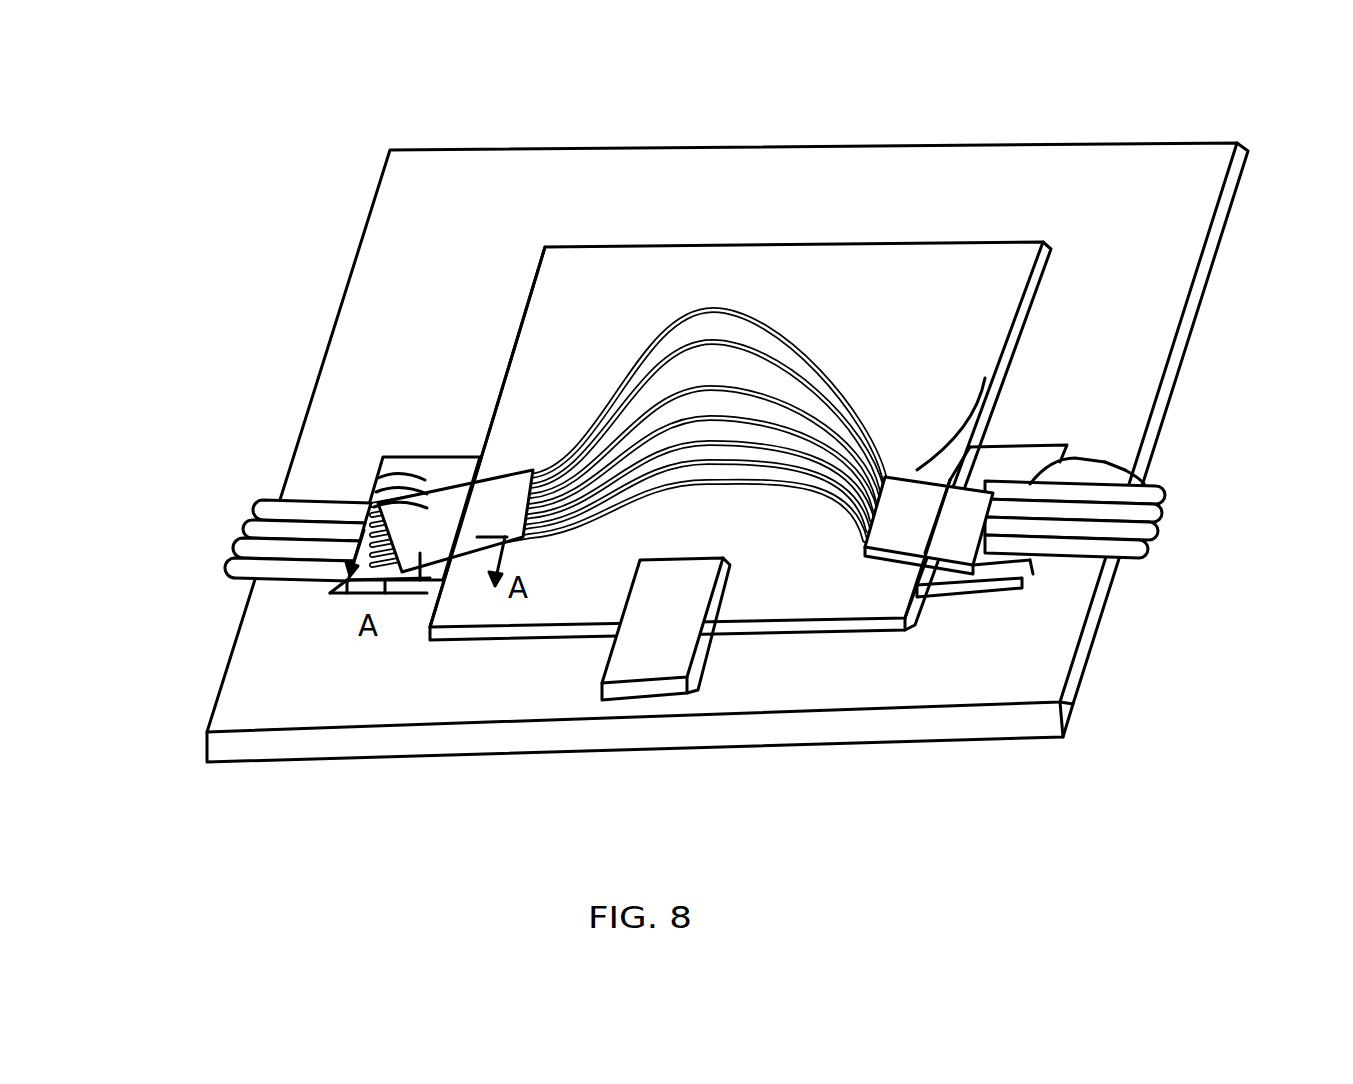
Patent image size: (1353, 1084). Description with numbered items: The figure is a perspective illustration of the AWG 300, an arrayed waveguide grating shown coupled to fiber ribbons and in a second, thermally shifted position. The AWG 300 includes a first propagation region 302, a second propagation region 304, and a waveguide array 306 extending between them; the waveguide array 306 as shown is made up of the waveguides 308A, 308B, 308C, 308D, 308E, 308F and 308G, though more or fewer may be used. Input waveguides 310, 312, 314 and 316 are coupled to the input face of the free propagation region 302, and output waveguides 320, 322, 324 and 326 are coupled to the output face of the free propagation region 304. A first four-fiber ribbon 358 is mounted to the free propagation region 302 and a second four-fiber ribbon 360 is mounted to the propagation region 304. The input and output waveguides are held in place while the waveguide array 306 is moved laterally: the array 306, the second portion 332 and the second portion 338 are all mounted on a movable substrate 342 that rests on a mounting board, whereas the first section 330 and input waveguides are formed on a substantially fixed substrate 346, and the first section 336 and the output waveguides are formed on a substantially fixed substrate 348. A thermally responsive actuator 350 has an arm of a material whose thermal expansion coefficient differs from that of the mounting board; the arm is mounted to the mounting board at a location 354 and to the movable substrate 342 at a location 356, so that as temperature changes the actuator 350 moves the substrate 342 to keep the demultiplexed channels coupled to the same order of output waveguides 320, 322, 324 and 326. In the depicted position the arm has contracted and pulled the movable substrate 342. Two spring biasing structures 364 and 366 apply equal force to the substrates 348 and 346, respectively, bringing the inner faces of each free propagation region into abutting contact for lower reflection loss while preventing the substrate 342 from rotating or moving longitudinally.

The AWG 300 is at (498, 125).
The first propagation region 302 is at (466, 597).
The second propagation region 304 is at (913, 566).
The waveguide array 306 is at (744, 421).
The waveguide 308A is at (613, 370).
The waveguide 308B is at (787, 380).
The waveguide 308C is at (797, 440).
The waveguide 308D is at (795, 462).
The waveguide 308E is at (590, 497).
The waveguide 308F is at (698, 462).
The waveguide 308G is at (790, 517).
The input waveguide 310 is at (365, 500).
The input waveguide 312 is at (355, 520).
The input waveguide 314 is at (337, 565).
The input waveguide 316 is at (340, 590).
The output waveguide 320 is at (1110, 470).
The output waveguide 322 is at (1140, 483).
The output waveguide 324 is at (1033, 562).
The output waveguide 326 is at (1030, 566).
The first section 330 is at (410, 593).
The second portion 332 is at (519, 476).
The first section 336 is at (973, 447).
The second portion 338 is at (990, 384).
The movable substrate 342 is at (992, 301).
The substantially fixed substrate 346 is at (348, 605).
The substantially fixed substrate 348 is at (963, 596).
The thermally responsive actuator 350 is at (713, 678).
The location 354 is at (690, 683).
The location 356 is at (699, 684).
The first four-fiber ribbon 358 is at (236, 518).
The second four-fiber ribbon 360 is at (1152, 549).
The spring biasing structure 364 is at (1100, 462).
The spring biasing structure 366 is at (375, 488).